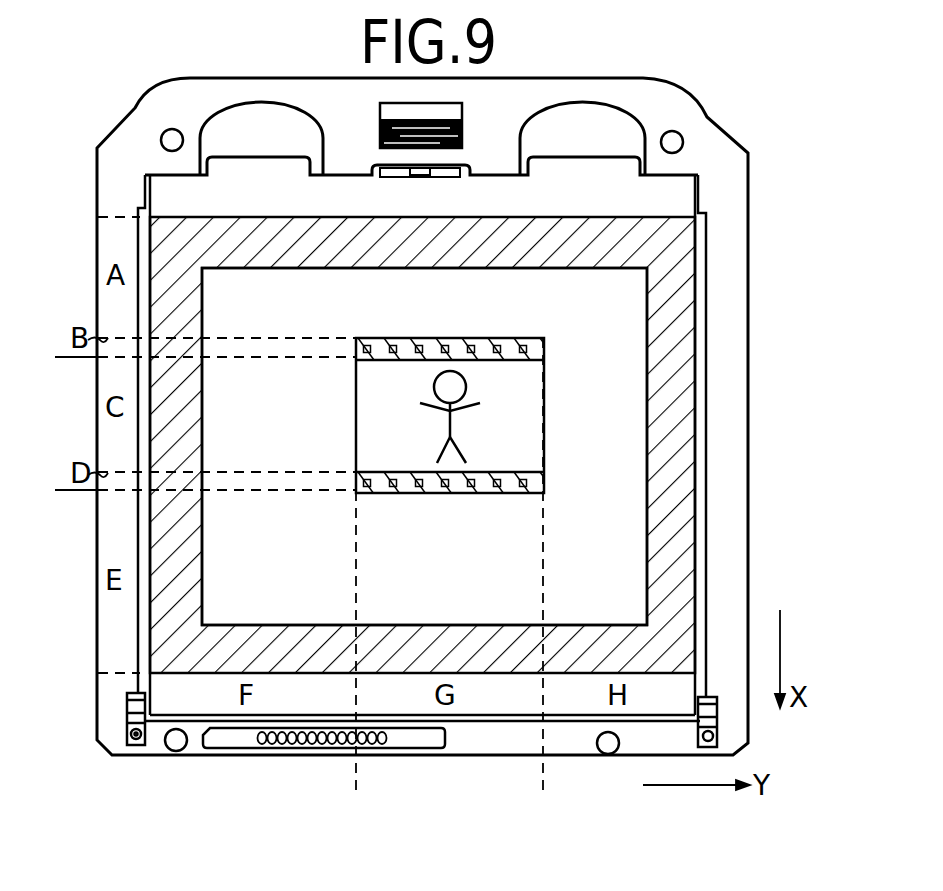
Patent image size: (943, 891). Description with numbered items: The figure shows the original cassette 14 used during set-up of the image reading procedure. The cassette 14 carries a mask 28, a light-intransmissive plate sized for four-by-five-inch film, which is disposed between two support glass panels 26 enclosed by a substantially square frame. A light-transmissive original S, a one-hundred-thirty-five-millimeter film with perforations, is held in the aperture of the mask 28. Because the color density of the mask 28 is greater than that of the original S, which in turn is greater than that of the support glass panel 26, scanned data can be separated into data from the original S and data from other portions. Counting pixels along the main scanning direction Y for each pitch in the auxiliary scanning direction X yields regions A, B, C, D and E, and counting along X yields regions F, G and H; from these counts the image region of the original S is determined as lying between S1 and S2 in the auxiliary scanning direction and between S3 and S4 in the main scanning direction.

The original cassette 14 is at (738, 129).
The mask 28 is at (682, 268).
The support glass panel 26 is at (622, 345).
The original S is at (528, 407).
The image region boundary S1 is at (193, 358).
The image region boundary S2 is at (193, 491).
The image region boundary S3 is at (359, 583).
The image region boundary S4 is at (547, 583).